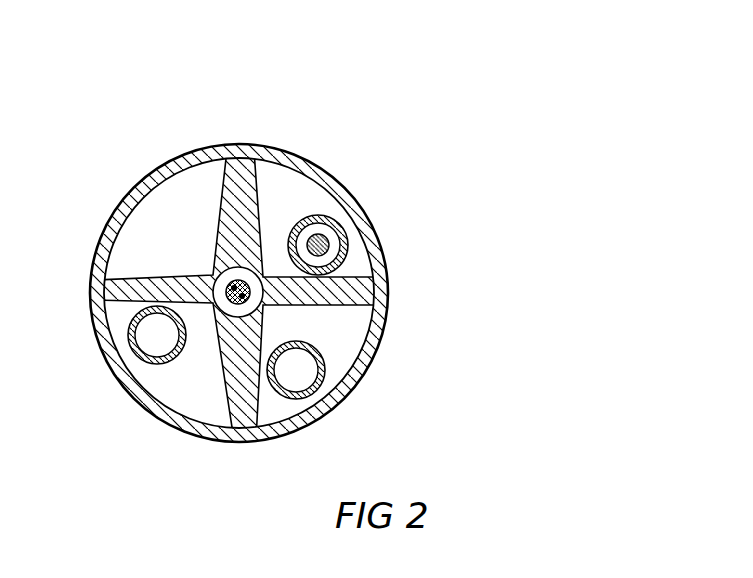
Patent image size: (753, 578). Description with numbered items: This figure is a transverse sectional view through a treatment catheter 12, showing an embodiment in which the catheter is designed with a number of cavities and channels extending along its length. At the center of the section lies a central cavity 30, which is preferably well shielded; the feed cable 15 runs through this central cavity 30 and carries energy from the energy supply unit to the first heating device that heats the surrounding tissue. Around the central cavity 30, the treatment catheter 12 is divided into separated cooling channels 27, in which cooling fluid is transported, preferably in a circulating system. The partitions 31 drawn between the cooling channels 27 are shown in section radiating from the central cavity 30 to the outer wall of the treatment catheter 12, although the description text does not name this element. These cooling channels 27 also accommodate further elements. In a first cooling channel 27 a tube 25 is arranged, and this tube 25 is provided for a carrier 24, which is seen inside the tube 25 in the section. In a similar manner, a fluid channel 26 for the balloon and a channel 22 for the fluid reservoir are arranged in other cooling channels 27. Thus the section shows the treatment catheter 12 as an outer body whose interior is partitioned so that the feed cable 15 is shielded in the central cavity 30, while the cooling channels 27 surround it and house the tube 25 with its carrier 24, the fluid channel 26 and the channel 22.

The treatment catheter 12 is at (178, 162).
The feed cable 15 is at (232, 288).
The channel 22 is at (148, 363).
The carrier 24 is at (327, 251).
The tube 25 is at (303, 218).
The fluid channel 26 is at (283, 394).
The cooling channels 27 is at (148, 228).
The central cavity 30 is at (247, 307).
The vane 31 is at (223, 208).